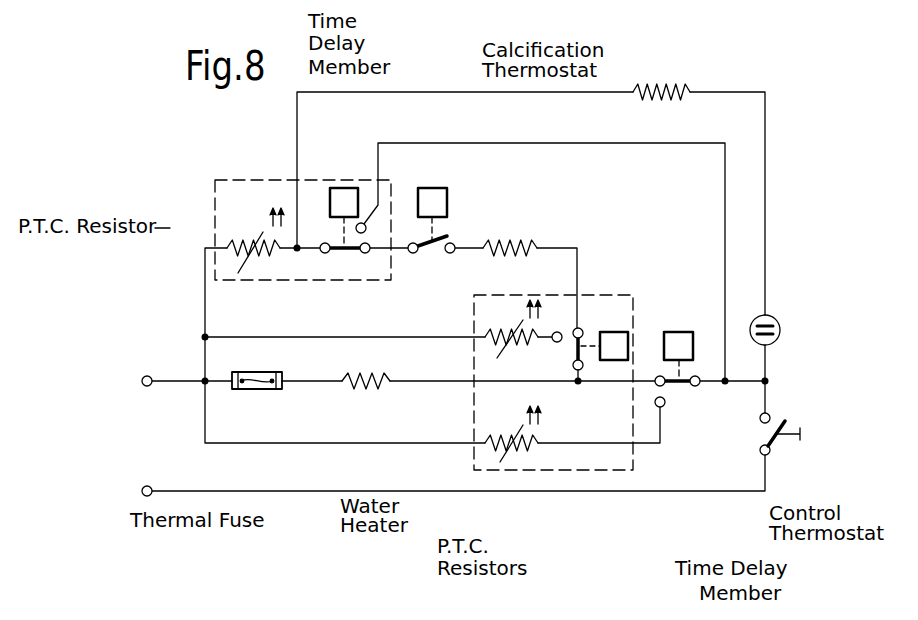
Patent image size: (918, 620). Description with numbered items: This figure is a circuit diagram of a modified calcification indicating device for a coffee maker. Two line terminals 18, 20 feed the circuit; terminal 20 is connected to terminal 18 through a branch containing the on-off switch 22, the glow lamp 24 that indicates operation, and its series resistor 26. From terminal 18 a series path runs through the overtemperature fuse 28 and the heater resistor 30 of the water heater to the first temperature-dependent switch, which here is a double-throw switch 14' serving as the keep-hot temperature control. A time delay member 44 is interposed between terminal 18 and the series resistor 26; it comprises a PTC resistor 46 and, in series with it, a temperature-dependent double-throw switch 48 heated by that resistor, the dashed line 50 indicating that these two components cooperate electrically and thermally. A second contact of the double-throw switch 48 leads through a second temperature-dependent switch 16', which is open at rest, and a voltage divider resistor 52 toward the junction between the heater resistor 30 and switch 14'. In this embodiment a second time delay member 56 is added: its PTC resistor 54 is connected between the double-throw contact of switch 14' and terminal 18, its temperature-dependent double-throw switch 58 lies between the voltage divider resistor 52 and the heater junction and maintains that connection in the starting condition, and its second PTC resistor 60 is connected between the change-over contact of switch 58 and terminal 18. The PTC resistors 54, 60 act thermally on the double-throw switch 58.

The first temperature-dependent switch 14' is at (708, 422).
The second temperature-dependent switch 16' is at (475, 166).
The line terminal 18 is at (144, 376).
The line terminal 20 is at (142, 489).
The on-off switch 22 is at (779, 443).
The glow lamp 24 is at (780, 323).
The series resistor 26 is at (657, 83).
The overtemperature fuse 28 is at (266, 522).
The heater resistor 30 is at (407, 527).
The time delay member 44 is at (300, 72).
The PTC resistor 46 is at (242, 242).
The double-throw switch 48 is at (353, 252).
The dashed line 50 is at (215, 196).
The voltage divider resistor 52 is at (525, 240).
The PTC resistor 54 is at (523, 455).
The second time delay member 56 is at (620, 479).
The temperature-dependent double-throw switch 58 is at (581, 345).
The second PTC resistor 60 is at (485, 538).